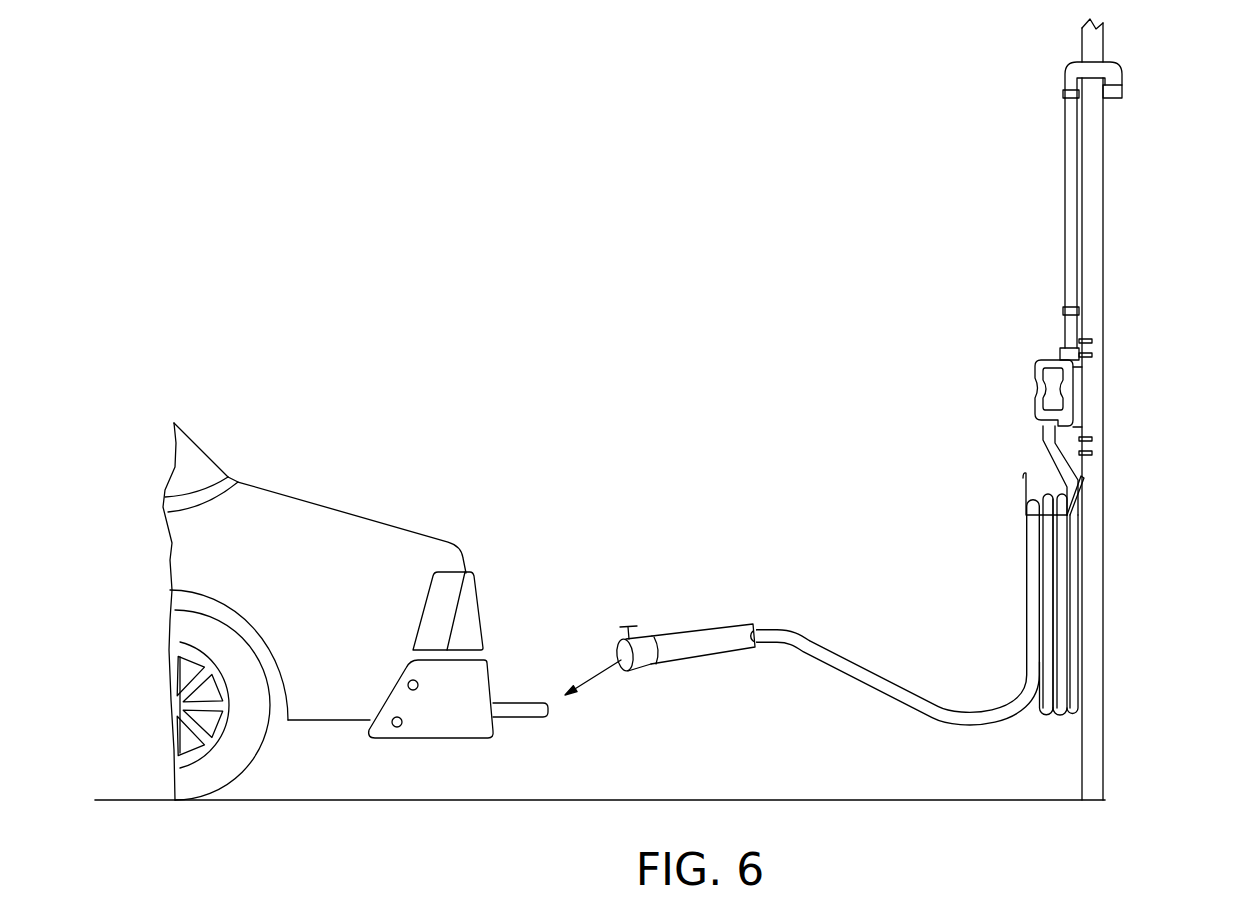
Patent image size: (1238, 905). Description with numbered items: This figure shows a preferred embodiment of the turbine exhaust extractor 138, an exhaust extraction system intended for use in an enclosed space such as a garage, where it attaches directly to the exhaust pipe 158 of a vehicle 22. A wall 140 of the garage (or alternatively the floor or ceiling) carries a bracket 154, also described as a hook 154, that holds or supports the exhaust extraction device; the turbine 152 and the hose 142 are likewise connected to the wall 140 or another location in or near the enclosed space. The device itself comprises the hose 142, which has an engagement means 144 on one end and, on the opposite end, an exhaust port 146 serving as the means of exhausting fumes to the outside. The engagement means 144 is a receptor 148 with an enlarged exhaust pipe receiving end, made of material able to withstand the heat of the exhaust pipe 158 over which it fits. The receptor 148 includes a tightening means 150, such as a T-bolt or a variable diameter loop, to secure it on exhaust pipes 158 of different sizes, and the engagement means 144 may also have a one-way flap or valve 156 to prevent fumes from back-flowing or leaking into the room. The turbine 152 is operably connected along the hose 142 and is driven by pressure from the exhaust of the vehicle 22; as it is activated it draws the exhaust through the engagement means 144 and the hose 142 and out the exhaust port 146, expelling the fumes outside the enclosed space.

The vehicle 22 is at (354, 478).
The turbine exhaust extractor 138 is at (893, 308).
The wall 140 is at (1105, 556).
The hose 142 is at (885, 684).
The engagement means 144 is at (715, 642).
The exhaust port 146 is at (1112, 72).
The receptor 148 is at (638, 665).
The tightening means 150 is at (630, 626).
The turbine 152 is at (1036, 390).
The bracket 154 is at (1024, 478).
The one-way flap or valve 156 is at (650, 641).
The exhaust pipe 158 is at (527, 712).